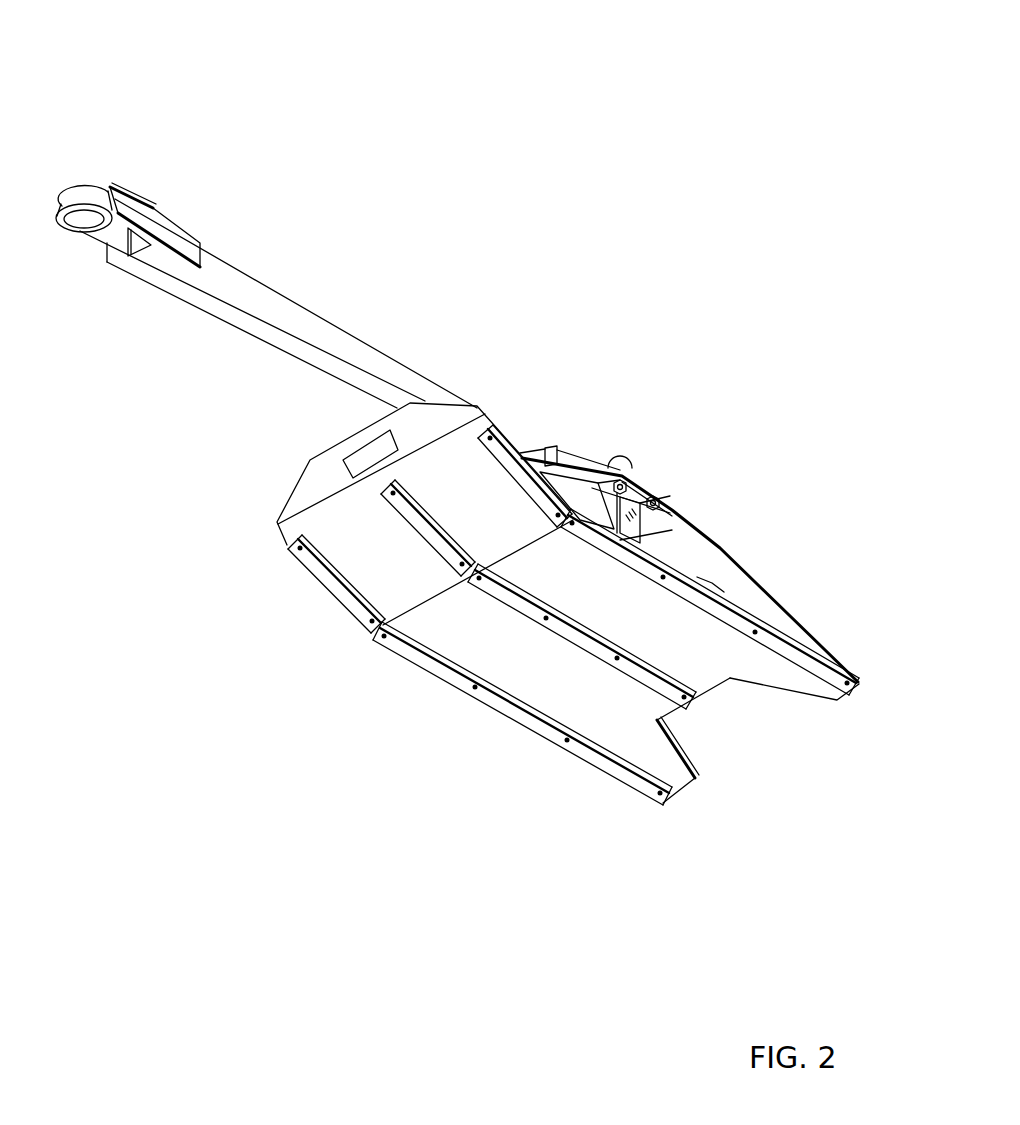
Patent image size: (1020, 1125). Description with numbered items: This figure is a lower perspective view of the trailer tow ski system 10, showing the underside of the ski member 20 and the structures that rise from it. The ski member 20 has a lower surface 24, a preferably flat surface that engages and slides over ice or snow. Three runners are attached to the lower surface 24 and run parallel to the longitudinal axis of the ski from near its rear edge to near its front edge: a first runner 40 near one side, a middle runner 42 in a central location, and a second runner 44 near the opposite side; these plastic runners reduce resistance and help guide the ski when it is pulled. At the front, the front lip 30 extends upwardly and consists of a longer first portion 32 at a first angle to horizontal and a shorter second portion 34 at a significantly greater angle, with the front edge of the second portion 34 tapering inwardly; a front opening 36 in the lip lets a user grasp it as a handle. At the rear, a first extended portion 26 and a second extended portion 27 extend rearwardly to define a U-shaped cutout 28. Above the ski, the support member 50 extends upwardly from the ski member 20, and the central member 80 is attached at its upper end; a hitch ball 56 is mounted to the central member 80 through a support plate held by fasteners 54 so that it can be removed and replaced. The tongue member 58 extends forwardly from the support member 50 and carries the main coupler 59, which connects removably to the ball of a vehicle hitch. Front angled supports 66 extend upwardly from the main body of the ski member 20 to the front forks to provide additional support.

The trailer tow ski system 10 is at (575, 154).
The ski member 20 is at (530, 672).
The lower surface 24 is at (445, 625).
The first extended portion 26 is at (687, 787).
The second extended portion 27 is at (835, 700).
The cutout 28 is at (716, 687).
The front lip 30 is at (276, 531).
The first portion 32 is at (373, 575).
The second portion 34 is at (397, 472).
The front opening 36 is at (360, 447).
The first runner 40 is at (590, 752).
The middle runner 42 is at (532, 613).
The second runner 44 is at (772, 640).
The support member 50 is at (640, 532).
The fasteners 54 is at (643, 497).
The hitch ball 56 is at (620, 452).
The tongue member 58 is at (266, 251).
The main coupler 59 is at (88, 184).
The front angled supports 66 is at (553, 452).
The central member 80 is at (640, 493).